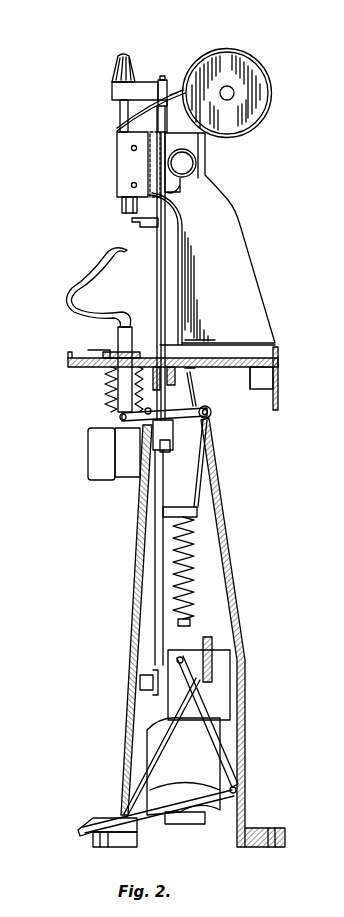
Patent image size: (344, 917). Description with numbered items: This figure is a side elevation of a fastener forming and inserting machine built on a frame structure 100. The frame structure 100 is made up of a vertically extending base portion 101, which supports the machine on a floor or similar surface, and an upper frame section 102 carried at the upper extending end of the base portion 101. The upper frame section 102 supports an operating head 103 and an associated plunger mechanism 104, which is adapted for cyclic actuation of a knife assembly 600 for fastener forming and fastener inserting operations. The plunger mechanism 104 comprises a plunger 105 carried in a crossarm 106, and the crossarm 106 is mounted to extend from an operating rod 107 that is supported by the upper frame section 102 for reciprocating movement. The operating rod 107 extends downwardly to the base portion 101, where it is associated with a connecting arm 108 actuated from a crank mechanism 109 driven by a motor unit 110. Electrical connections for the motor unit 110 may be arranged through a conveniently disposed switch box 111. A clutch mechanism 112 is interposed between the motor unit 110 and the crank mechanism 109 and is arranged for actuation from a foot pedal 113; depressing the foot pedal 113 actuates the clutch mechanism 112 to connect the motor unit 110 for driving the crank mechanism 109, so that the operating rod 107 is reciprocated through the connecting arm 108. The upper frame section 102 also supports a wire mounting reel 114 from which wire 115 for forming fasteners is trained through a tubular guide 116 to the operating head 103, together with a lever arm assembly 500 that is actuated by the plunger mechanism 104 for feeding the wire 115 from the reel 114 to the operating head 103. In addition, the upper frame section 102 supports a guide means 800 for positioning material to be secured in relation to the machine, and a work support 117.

The frame structure 100 is at (130, 556).
The base portion 101 is at (243, 613).
The upper frame section 102 is at (246, 240).
The operating head 103 is at (117, 164).
The plunger mechanism 104 is at (104, 91).
The plunger 105 is at (118, 116).
The crossarm 106 is at (152, 82).
The operating rod 107 is at (157, 283).
The connecting arm 108 is at (157, 600).
The crank mechanism 109 is at (140, 683).
The motor unit 110 is at (207, 757).
The switch box 111 is at (88, 433).
The clutch mechanism 112 is at (237, 666).
The foot pedal 113 is at (86, 822).
The wire mounting reel 114 is at (232, 49).
The wire 115 is at (178, 85).
The tubular guide 116 is at (134, 104).
The work support 117 is at (72, 304).
The lever arm assembly 500 is at (186, 163).
The knife assembly 600 is at (122, 206).
The guide means 800 is at (133, 222).